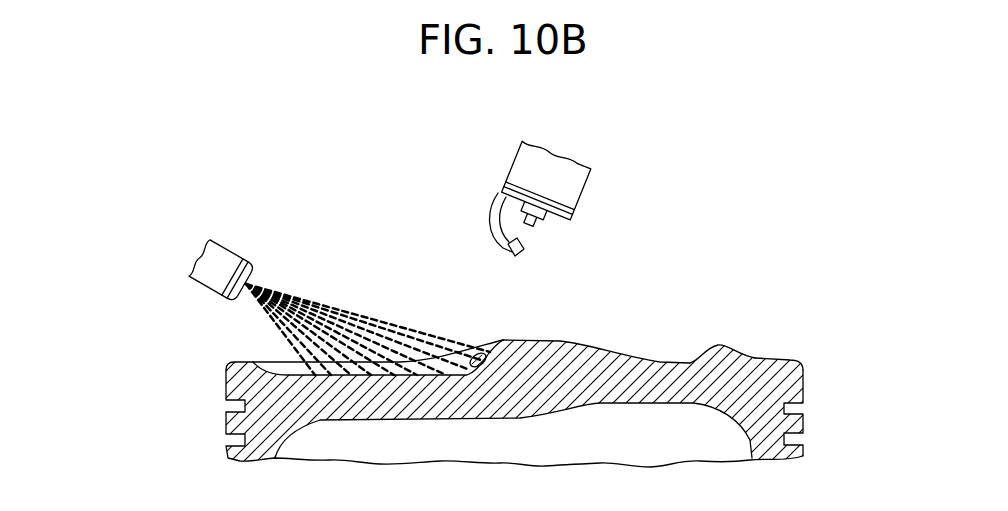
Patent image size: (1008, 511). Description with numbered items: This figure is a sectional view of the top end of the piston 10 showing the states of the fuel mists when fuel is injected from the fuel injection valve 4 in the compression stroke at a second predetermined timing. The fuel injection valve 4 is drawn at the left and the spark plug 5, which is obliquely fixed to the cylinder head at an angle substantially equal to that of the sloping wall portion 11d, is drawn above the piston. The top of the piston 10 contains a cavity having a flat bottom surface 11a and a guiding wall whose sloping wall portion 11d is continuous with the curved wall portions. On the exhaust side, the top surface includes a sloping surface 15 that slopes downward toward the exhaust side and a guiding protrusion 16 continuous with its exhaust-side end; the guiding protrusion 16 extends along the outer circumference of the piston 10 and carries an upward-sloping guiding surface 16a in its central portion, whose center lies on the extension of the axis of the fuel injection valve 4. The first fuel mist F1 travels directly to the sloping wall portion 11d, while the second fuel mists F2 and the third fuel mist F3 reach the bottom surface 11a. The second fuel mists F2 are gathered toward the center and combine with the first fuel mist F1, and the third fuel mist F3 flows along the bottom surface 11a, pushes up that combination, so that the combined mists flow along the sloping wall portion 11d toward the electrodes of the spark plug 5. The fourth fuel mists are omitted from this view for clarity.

The fuel injection valve 4 is at (236, 248).
The spark plug 5 is at (588, 197).
The piston 10 is at (208, 417).
The bottom surface 11a is at (287, 364).
The sloping wall portion 11d is at (473, 368).
The sloping surface 15 is at (634, 352).
The guiding protrusion 16 is at (733, 353).
The sloping surface (guiding surface) 16a is at (706, 352).
The first fuel mist F1 is at (422, 332).
The second fuel mists F2 is at (372, 370).
The third fuel mist F3 is at (298, 350).